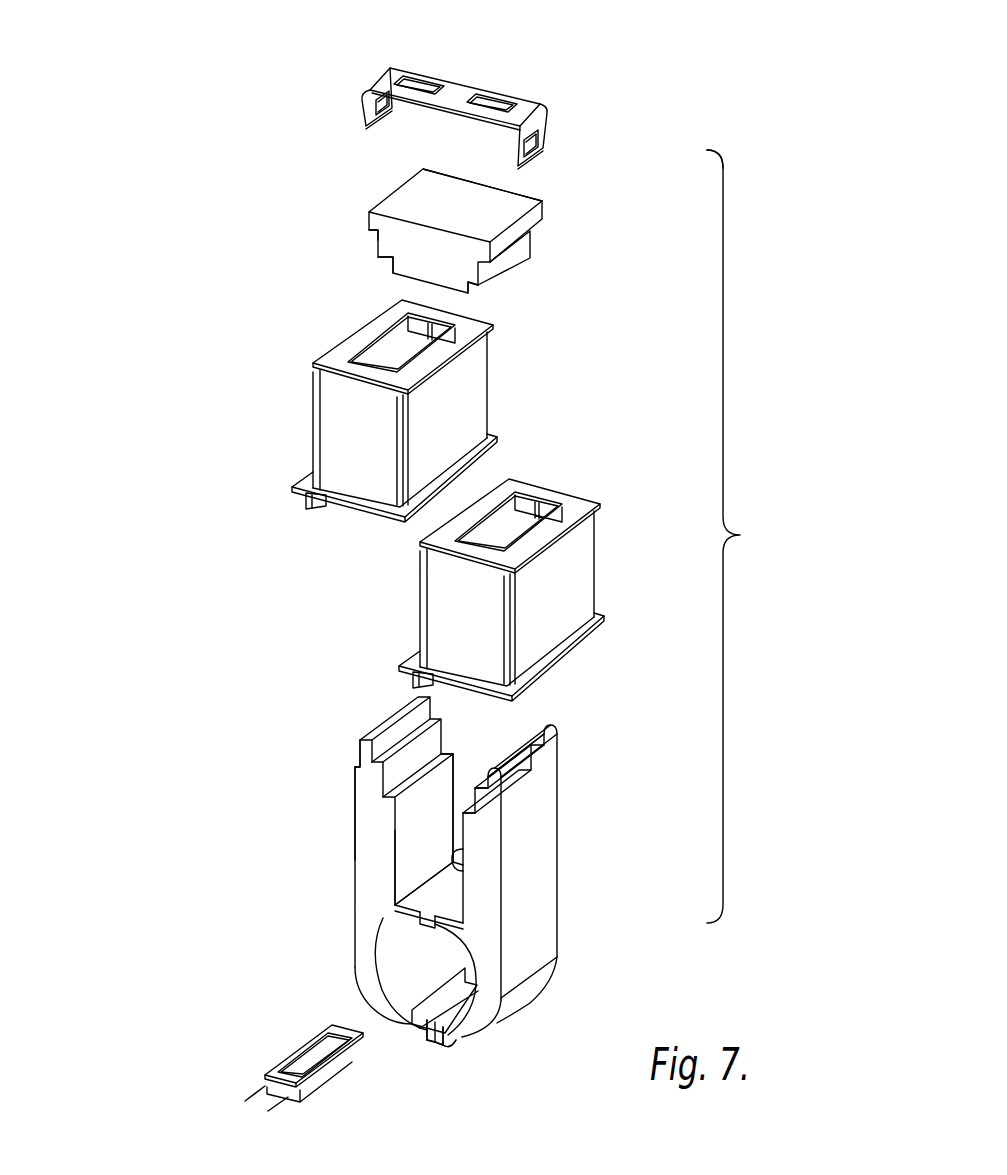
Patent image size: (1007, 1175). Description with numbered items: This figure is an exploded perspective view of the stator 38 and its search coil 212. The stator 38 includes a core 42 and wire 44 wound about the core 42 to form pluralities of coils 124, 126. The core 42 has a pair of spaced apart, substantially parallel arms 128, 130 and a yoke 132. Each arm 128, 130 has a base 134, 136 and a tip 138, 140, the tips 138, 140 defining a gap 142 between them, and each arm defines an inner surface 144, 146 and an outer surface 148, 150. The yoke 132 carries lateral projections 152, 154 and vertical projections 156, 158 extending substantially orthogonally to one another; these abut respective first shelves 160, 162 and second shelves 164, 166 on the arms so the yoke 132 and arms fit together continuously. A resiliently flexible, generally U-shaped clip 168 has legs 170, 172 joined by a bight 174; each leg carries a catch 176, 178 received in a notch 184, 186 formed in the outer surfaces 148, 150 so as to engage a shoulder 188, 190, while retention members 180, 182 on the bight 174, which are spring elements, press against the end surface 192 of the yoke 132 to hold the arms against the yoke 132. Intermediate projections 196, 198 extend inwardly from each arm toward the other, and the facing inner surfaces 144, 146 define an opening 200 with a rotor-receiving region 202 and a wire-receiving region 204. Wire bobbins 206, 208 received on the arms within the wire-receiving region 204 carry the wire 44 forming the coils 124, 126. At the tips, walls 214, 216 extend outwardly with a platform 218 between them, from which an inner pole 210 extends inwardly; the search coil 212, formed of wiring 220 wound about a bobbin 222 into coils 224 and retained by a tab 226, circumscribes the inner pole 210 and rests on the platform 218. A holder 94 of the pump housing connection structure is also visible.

The stator 38 is at (634, 78).
The core 42 is at (446, 900).
The wire 44 is at (470, 422).
The holder 94 is at (451, 1054).
The coils 124 is at (530, 586).
The coils 126 is at (419, 411).
The arm 128 is at (448, 900).
The arm 130 is at (374, 850).
The yoke 132 is at (454, 223).
The base 134 is at (546, 874).
The base 136 is at (362, 785).
The tip 138 is at (420, 1058).
The tip 140 is at (412, 1030).
The gap 142 is at (413, 1028).
The inner surface 144 is at (462, 866).
The inner surface 146 is at (438, 797).
The outer surface 148 is at (536, 951).
The outer surface 150 is at (355, 812).
The lateral projection 152 is at (534, 216).
The lateral projection 154 is at (374, 223).
The vertical projection 156 is at (470, 288).
The vertical projection 158 is at (387, 266).
The first shelf 160 is at (488, 786).
The first shelf 162 is at (421, 723).
The second shelf 164 is at (474, 815).
The second shelf 166 is at (441, 757).
The clip 168 is at (456, 94).
The leg 170 is at (577, 137).
The leg 172 is at (356, 106).
The bight 174 is at (473, 86).
The catch 176 is at (536, 141).
The catch 178 is at (384, 112).
The retention member 180 is at (481, 100).
The retention member 182 is at (428, 88).
The notch 184 is at (562, 758).
The notch 186 is at (354, 767).
The shoulder 188 is at (543, 766).
The shoulder 190 is at (358, 764).
The end surface 192 is at (457, 200).
The intermediate projection 196 is at (441, 921).
The intermediate projection 198 is at (415, 904).
The opening 200 is at (414, 880).
The rotor-receiving region 202 is at (404, 977).
The wire-receiving region 204 is at (426, 843).
The wire bobbin 206 is at (541, 522).
The wire bobbin 208 is at (466, 331).
The inner pole 210 is at (430, 1030).
The search coil 212 is at (275, 1081).
The wall 214 is at (457, 1034).
The wall 216 is at (412, 1033).
The platform 218 is at (447, 1047).
The wiring 220 is at (312, 1086).
The bobbin 222 is at (303, 1053).
The coils 224 is at (328, 1072).
The tab 226 is at (268, 1110).